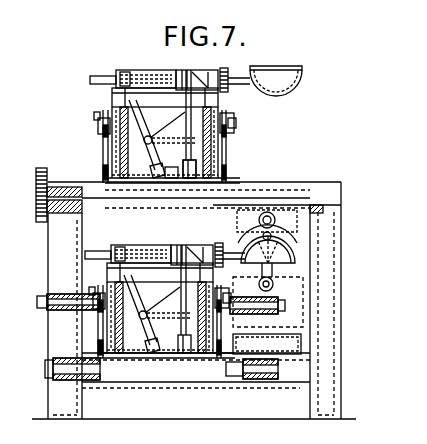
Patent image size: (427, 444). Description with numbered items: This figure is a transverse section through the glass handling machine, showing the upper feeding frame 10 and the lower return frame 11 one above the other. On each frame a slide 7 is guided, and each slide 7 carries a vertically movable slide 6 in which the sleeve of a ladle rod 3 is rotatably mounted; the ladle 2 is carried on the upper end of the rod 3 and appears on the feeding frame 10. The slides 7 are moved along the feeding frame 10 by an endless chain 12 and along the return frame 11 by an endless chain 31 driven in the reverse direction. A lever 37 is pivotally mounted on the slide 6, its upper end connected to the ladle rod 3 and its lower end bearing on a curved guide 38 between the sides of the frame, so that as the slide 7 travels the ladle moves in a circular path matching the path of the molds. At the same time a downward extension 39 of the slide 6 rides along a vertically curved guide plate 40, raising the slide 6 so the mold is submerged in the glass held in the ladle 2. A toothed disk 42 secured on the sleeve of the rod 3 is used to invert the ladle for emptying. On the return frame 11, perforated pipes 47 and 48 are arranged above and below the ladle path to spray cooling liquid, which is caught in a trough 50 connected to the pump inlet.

The ladle 2 is at (296, 82).
The ladle rod 3 is at (252, 90).
The vertically movable slide 6 is at (165, 72).
The slide 7 is at (114, 98).
The feeding frame 10 is at (100, 132).
The return frame 11 is at (115, 342).
The endless chain 12 is at (100, 148).
The endless chain 31 is at (100, 330).
The lever 37 is at (150, 162).
The curved guide 38 is at (168, 183).
The downward extension 39 is at (200, 152).
The guide plate 40 is at (190, 184).
The toothed disk 42 is at (228, 92).
The pipe 47 is at (303, 246).
The pipe 48 is at (273, 283).
The trough 50 is at (293, 317).